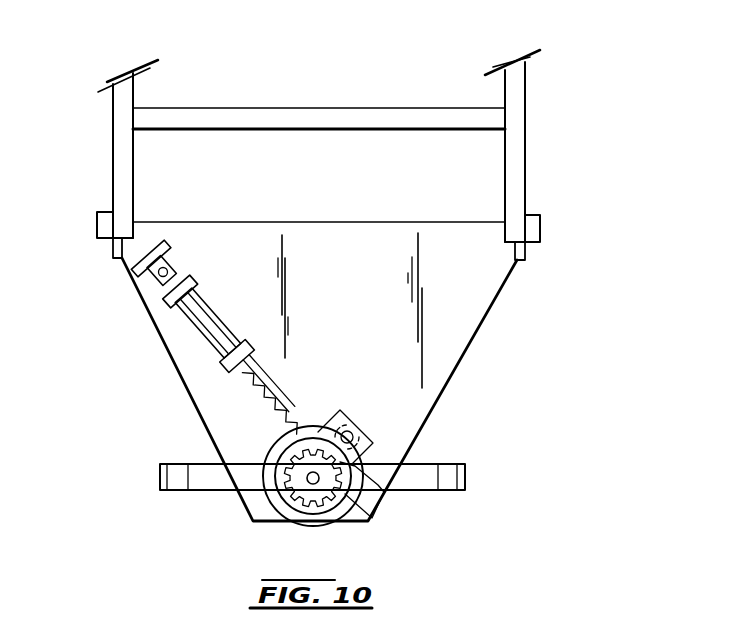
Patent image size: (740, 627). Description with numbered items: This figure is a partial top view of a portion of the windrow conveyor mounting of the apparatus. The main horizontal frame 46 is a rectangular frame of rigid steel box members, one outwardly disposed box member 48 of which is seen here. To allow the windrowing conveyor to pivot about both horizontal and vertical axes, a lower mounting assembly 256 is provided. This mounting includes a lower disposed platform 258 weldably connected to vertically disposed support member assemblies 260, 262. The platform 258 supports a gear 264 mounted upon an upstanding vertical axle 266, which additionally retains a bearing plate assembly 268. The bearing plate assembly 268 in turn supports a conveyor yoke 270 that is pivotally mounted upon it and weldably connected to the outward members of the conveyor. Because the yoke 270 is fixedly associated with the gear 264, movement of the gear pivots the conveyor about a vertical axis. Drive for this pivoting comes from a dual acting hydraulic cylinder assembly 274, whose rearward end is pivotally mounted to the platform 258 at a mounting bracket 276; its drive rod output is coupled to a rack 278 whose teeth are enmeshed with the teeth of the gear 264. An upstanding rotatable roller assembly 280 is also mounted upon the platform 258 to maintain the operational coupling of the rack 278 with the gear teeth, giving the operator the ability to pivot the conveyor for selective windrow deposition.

The main horizontal frame 46 is at (322, 96).
The outwardly disposed box member 48 is at (120, 167).
The lower mounting assembly 256 is at (578, 126).
The lower disposed platform 258 is at (452, 348).
The vertically disposed support member assembly 260 is at (105, 226).
The vertically disposed support member assembly 262 is at (541, 228).
The gear 264 is at (318, 518).
The upstanding vertical axle 266 is at (313, 484).
The bearing plate assembly 268 is at (372, 517).
The conveyor yoke 270 is at (160, 477).
The dual acting hydraulic cylinder assembly 274 is at (203, 327).
The mounting bracket 276 is at (130, 276).
The rack 278 is at (287, 397).
The upstanding rotatable roller assembly 280 is at (356, 425).